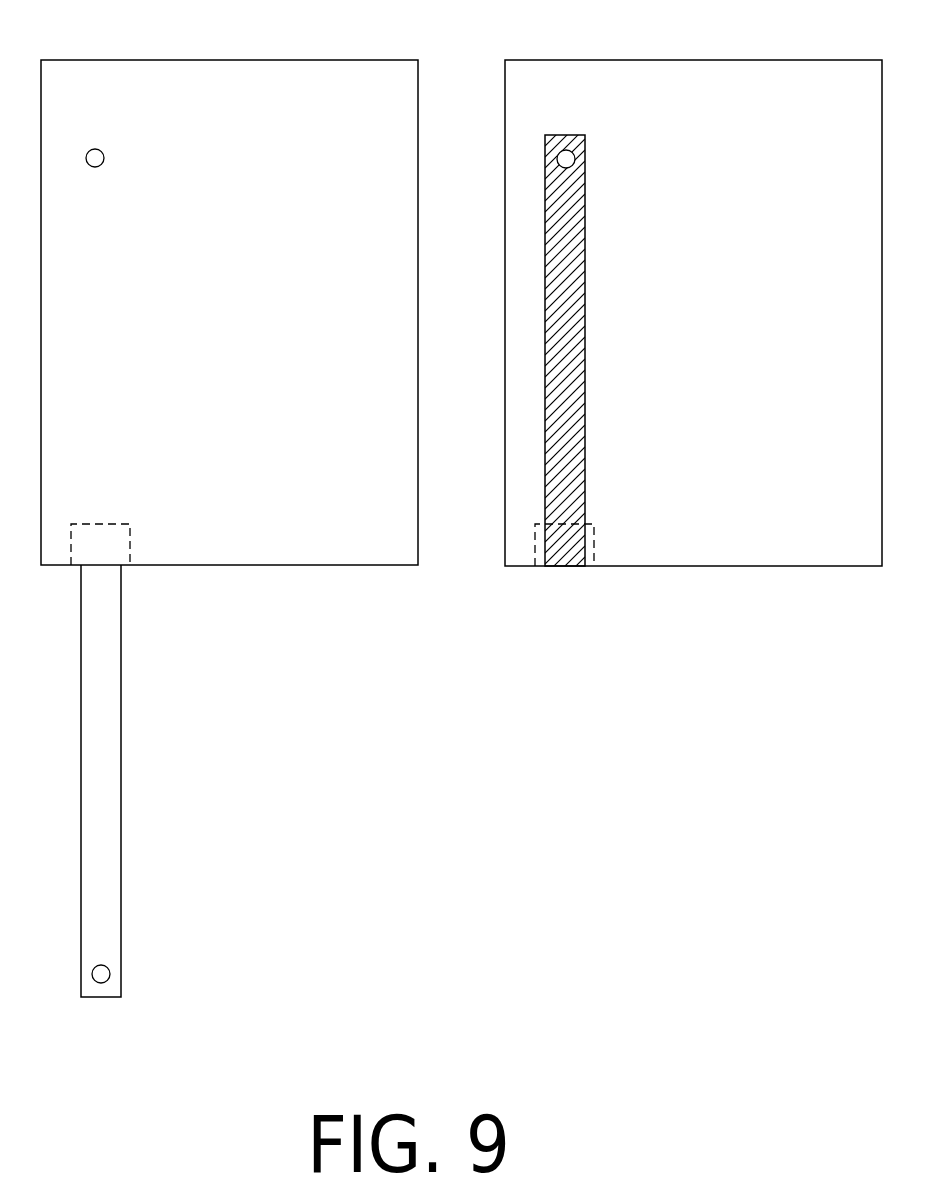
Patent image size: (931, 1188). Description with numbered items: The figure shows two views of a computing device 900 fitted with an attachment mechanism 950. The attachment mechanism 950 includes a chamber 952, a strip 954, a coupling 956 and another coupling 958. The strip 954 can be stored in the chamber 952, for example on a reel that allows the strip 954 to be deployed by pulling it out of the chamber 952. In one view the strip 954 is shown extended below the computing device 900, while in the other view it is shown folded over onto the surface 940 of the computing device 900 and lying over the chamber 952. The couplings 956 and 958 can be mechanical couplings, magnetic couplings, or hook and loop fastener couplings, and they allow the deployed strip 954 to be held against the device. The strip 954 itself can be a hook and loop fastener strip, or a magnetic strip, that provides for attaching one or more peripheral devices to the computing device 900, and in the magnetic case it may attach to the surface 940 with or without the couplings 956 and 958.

The computing device 900 is at (338, 37).
The surface 940 is at (265, 322).
The attachment mechanism 950 is at (446, 552).
The chamber 952 is at (130, 533).
The strip 954 is at (121, 800).
The coupling 956 is at (109, 978).
The another coupling 958 is at (103, 155).